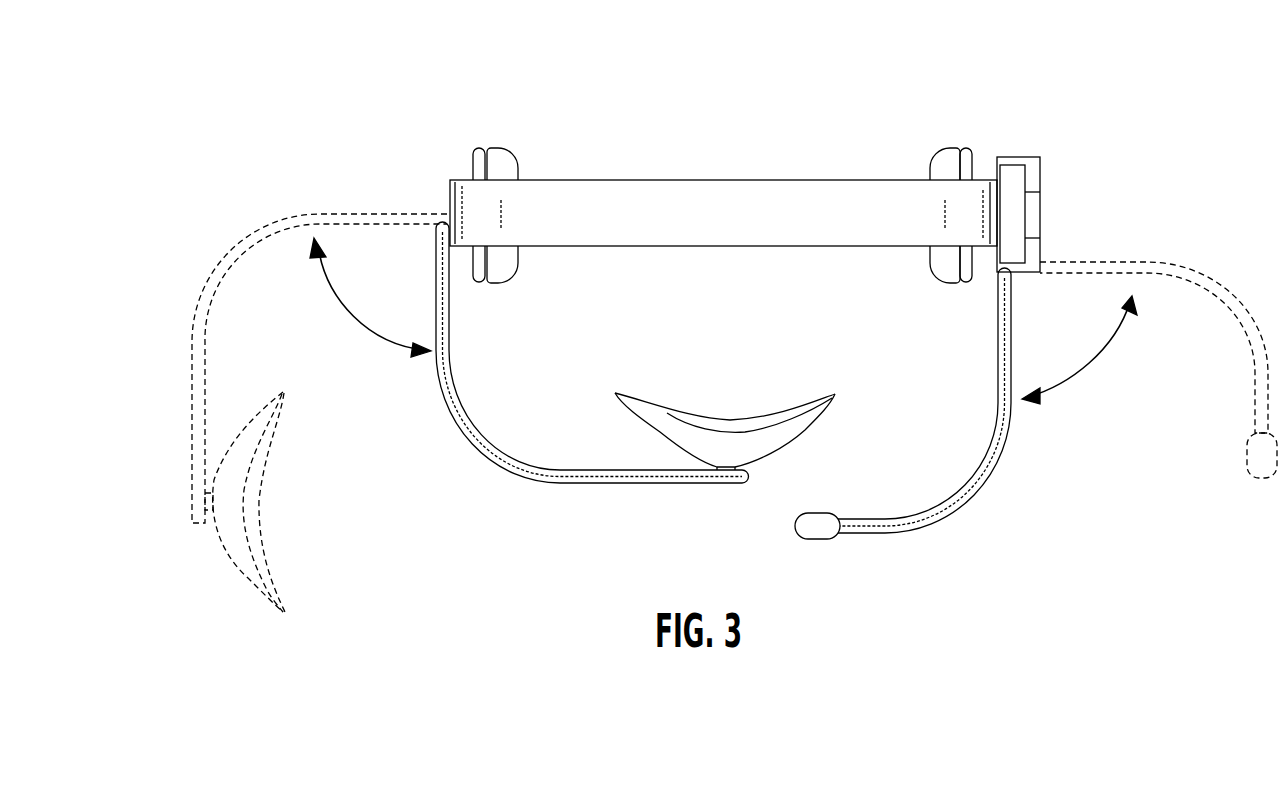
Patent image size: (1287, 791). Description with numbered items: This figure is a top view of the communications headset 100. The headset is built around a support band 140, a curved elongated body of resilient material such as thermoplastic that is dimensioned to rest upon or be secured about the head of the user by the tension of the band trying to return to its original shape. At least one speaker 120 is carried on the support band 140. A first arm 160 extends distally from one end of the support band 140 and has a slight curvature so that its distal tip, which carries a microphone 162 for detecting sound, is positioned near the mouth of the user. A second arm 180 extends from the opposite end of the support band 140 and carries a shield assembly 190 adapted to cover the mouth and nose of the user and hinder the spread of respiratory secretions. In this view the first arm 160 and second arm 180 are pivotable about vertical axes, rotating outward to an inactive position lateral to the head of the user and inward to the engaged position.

The communications headset 100 is at (735, 68).
The speaker 120 is at (500, 163).
The support band 140 is at (775, 195).
The first arm 160 is at (995, 458).
The microphone 162 is at (820, 537).
The second arm 180 is at (473, 432).
The shield assembly 190 is at (752, 445).